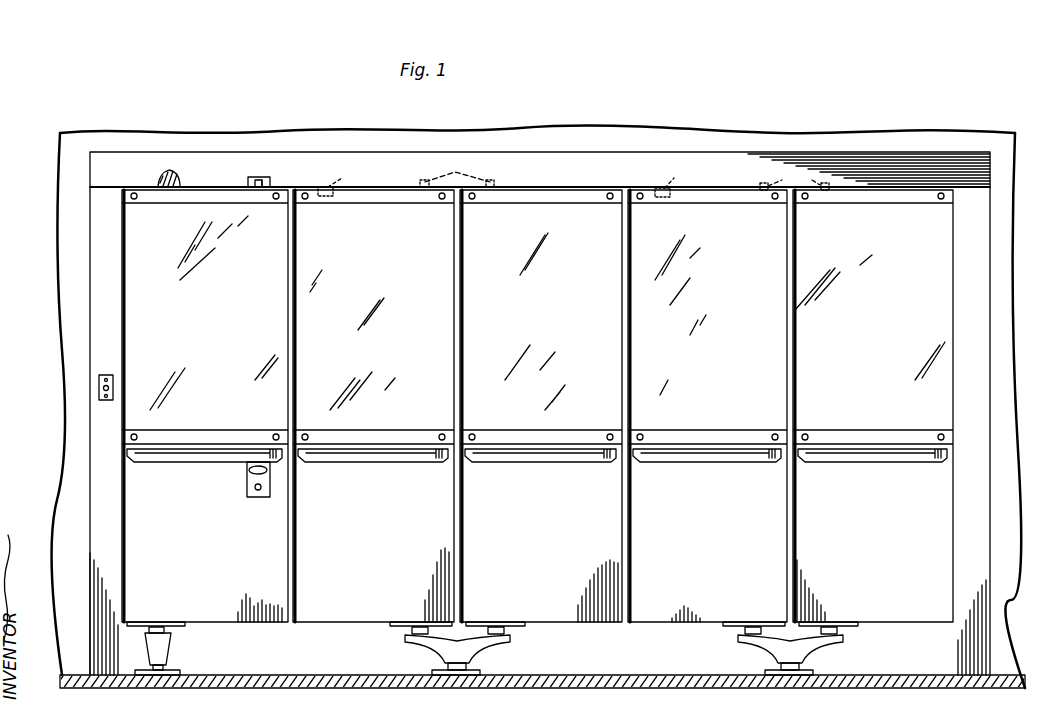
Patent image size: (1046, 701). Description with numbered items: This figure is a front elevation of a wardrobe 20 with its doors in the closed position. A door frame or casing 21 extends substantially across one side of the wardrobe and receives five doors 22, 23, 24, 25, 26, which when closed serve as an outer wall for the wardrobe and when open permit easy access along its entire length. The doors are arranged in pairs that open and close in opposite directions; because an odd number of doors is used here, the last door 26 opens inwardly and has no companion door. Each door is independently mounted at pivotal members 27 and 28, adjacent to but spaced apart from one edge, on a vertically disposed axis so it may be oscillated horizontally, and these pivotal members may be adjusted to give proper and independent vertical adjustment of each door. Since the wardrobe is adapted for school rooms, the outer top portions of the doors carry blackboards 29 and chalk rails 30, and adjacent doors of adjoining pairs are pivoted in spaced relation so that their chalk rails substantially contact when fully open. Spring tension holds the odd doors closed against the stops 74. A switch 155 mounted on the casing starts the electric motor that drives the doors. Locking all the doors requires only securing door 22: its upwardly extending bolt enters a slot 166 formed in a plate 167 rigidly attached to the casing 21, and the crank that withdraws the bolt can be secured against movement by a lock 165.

The wardrobe 20 is at (542, 659).
The door frame or casing 21 is at (102, 272).
The door 22 is at (205, 406).
The door 23 is at (373, 406).
The door 24 is at (541, 406).
The door 25 is at (707, 406).
The door 26 is at (873, 406).
The pivotal member 27 is at (158, 182).
The pivotal member 28 is at (160, 626).
The blackboard 29 is at (547, 313).
The chalk rail 30 is at (195, 462).
The stop 74 is at (502, 181).
The switch 155 is at (99, 389).
The lock 165 is at (258, 497).
The slot 166 is at (248, 181).
The plate 167 is at (272, 186).